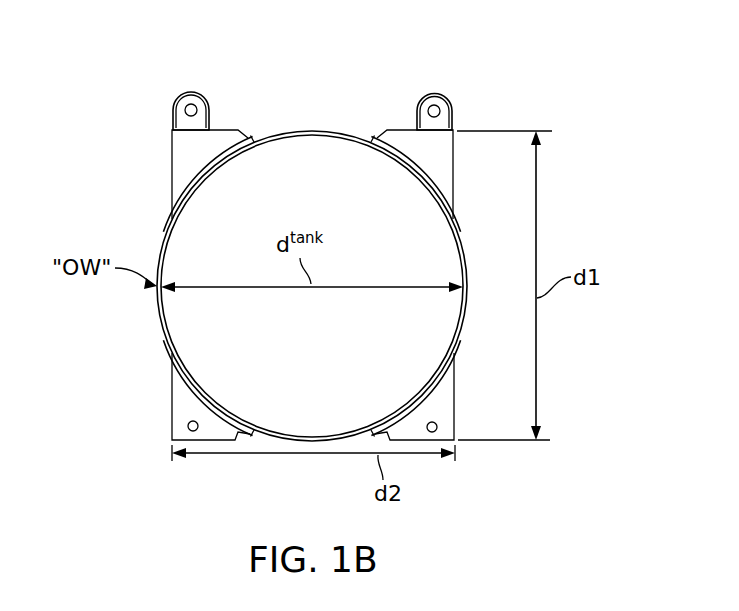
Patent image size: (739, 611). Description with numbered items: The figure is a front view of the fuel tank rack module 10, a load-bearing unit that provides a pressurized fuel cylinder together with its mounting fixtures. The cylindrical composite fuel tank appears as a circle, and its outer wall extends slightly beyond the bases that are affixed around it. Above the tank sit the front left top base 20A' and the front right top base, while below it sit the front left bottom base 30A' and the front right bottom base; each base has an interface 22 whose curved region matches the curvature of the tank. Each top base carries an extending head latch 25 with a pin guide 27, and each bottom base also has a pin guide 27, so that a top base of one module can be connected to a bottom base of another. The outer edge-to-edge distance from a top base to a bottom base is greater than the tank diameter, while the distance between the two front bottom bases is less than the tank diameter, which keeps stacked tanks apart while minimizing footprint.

The rack module 10 is at (320, 106).
The interface 22 is at (205, 174).
The head latch 25 is at (432, 92).
The pin guide 27 is at (190, 95).
The front left top base 20A' is at (162, 165).
The front left bottom base 30A' is at (157, 398).